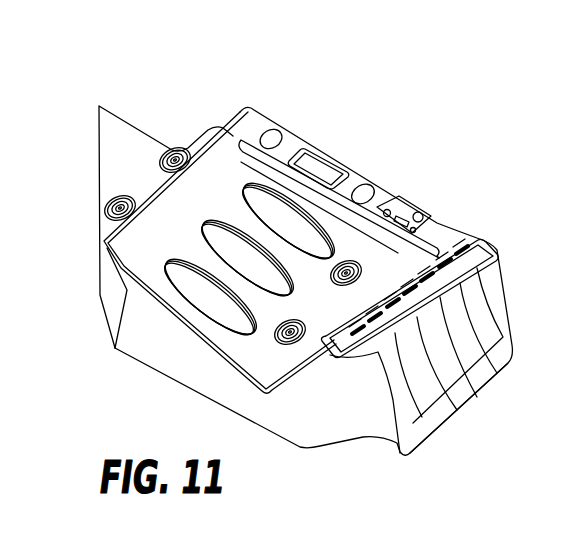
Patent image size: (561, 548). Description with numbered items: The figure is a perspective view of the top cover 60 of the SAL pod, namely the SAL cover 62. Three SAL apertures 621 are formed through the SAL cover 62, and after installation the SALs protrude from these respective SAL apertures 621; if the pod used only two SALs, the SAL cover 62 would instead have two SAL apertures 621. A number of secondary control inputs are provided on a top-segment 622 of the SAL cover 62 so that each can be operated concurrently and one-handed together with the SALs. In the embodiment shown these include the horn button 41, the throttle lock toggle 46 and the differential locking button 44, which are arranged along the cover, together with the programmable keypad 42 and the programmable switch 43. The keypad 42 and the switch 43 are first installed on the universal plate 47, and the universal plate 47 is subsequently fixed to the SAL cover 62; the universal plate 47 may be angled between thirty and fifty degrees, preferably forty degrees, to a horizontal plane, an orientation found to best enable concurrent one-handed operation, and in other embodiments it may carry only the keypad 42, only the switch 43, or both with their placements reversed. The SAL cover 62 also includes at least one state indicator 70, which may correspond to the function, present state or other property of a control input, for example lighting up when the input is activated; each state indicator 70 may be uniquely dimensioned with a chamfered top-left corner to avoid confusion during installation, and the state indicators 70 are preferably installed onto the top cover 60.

The top cover 60 is at (305, 254).
The SAL cover 62 is at (392, 97).
The SAL apertures 621 is at (203, 300).
The top-segment 622 is at (428, 435).
The horn button 41 is at (272, 137).
The throttle lock toggle 46 is at (318, 162).
The differential locking button 44 is at (364, 190).
The state indicator 70 is at (402, 208).
The programmable keypad 42 is at (415, 340).
The universal plate 47 is at (452, 408).
The programmable switch 43 is at (506, 366).